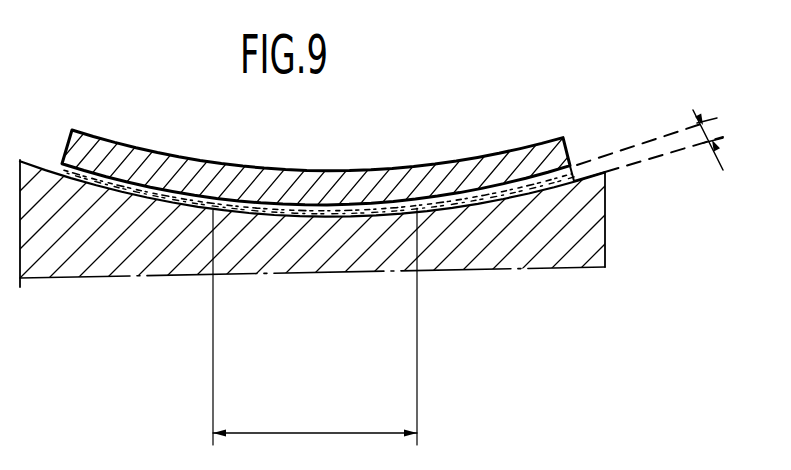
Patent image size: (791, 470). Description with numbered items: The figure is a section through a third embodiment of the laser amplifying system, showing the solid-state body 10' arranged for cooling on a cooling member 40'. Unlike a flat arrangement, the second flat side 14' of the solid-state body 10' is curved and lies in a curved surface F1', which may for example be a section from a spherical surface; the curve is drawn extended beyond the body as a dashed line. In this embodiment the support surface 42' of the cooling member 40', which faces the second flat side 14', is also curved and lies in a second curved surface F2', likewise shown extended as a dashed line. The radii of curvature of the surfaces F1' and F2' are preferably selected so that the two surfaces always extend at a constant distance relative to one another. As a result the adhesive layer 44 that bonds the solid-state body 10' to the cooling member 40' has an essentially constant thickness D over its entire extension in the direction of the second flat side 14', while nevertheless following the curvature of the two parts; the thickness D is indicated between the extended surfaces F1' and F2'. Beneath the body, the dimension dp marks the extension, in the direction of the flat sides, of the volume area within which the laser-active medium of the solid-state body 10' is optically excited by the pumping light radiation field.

The solid-state body 10' is at (320, 117).
The second flat side 14' is at (319, 117).
The cooling member 40' is at (388, 212).
The support surface 42' is at (658, 96).
The adhesive layer 44 is at (107, 180).
The surface F1' is at (642, 97).
The surface F2' is at (638, 188).
The thickness D is at (721, 135).
The extension dp is at (315, 326).